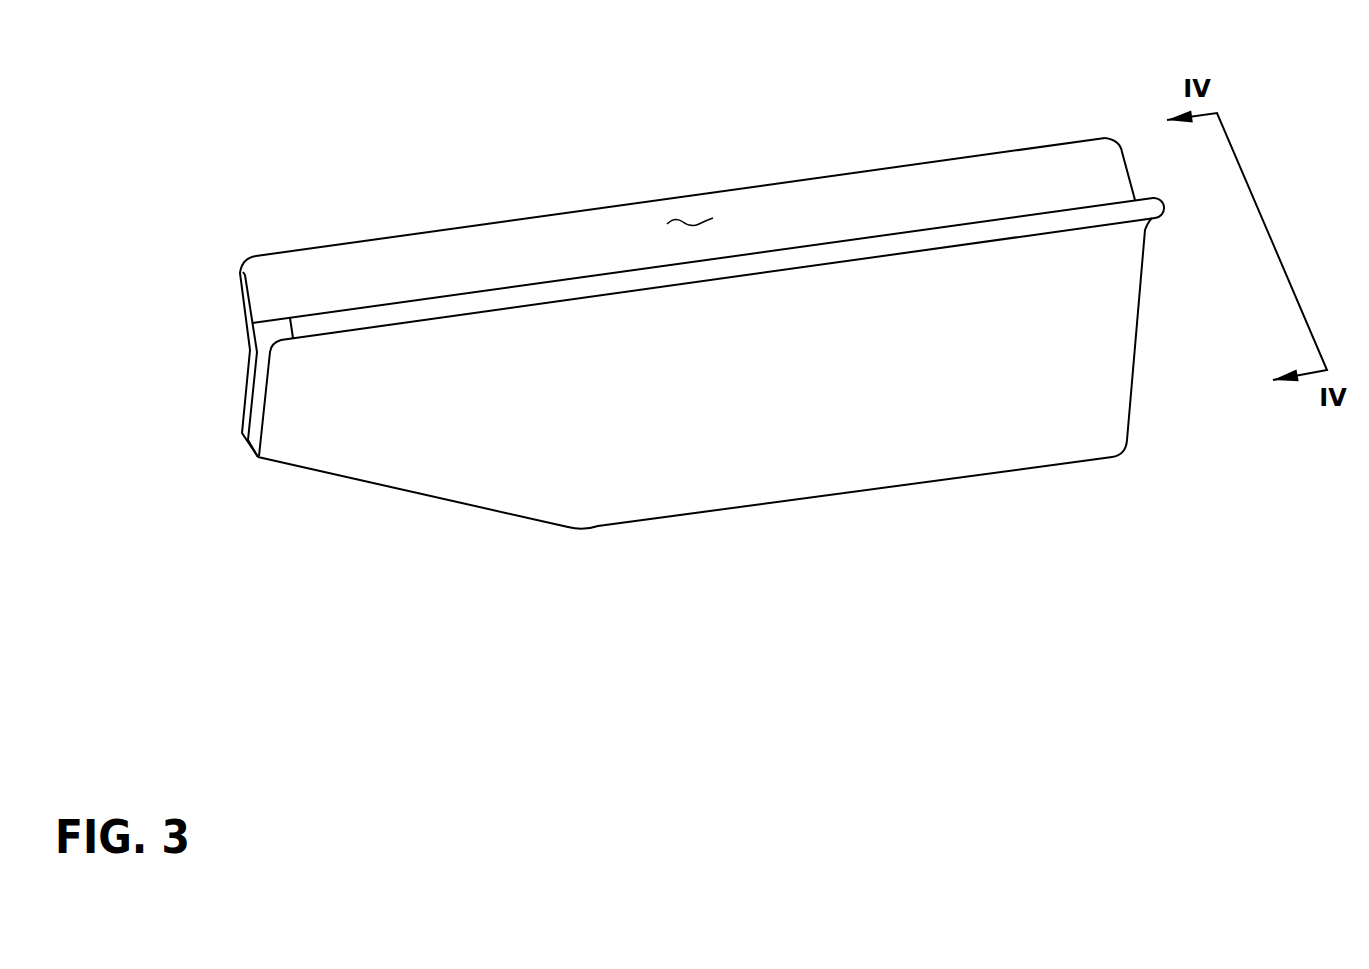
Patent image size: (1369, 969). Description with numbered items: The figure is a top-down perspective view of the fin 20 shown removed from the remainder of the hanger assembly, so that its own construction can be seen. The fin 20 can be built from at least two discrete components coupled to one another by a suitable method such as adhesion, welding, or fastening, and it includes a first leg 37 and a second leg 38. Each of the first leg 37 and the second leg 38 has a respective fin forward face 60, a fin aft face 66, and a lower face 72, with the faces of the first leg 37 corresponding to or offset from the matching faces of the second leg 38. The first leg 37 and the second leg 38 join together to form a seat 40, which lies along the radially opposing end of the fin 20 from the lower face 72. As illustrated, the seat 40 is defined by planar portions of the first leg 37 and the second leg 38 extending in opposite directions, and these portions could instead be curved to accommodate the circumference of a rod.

The fin 20 is at (158, 77).
The seat 40 is at (700, 223).
The second leg 38 is at (247, 373).
The fin forward face 60 is at (244, 401).
The fin aft face 66 is at (1137, 320).
The first leg 37 is at (1135, 358).
The lower face 72 is at (810, 498).